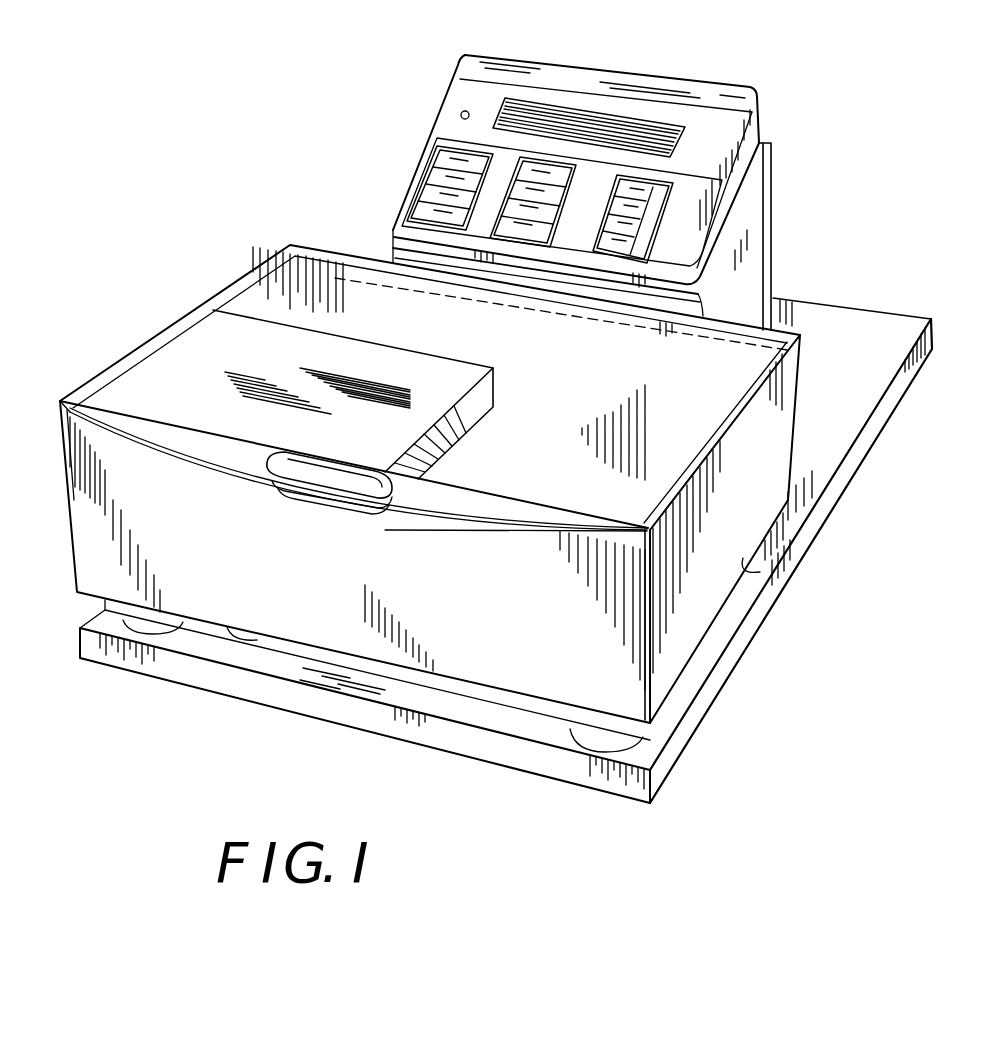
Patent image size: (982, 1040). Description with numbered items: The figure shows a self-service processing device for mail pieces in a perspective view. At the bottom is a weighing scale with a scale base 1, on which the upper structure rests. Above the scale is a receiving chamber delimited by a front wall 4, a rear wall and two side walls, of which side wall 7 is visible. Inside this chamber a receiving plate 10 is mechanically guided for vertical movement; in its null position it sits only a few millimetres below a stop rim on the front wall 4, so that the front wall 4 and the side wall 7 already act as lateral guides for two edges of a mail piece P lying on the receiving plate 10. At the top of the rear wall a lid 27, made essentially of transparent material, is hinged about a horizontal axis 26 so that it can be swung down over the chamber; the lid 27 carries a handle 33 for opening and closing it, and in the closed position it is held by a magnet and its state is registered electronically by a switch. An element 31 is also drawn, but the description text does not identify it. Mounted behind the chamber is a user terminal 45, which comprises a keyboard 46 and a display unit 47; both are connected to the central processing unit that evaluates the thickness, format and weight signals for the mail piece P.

The scale base 1 is at (333, 660).
The front wall 4 is at (361, 601).
The side wall 7 is at (732, 516).
The receiving plate 10 is at (722, 504).
The horizontal axis 26 is at (772, 328).
The lid 27 is at (743, 360).
The front cover 31 is at (193, 432).
The handle 33 is at (307, 470).
The user terminal 45 is at (462, 113).
The keyboard 46 is at (568, 233).
The display unit 47 is at (530, 117).
The mail piece P is at (393, 353).